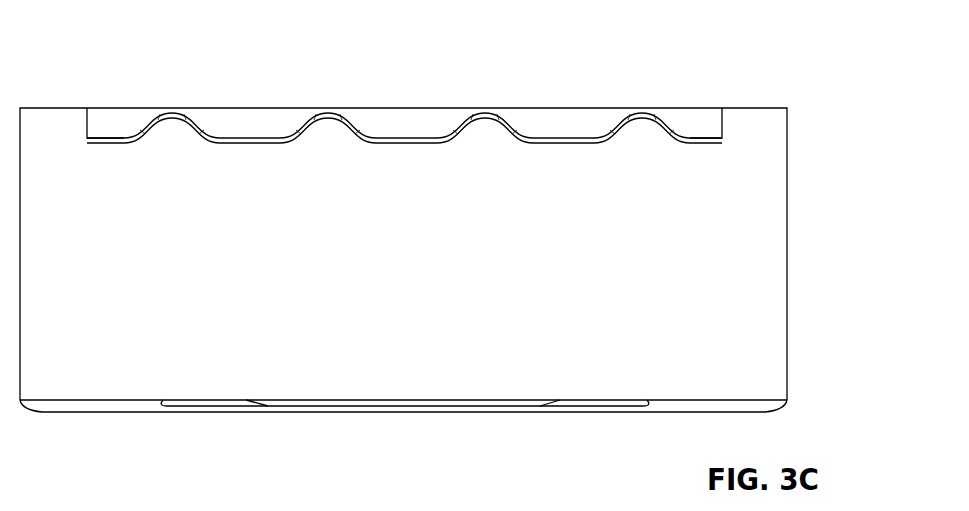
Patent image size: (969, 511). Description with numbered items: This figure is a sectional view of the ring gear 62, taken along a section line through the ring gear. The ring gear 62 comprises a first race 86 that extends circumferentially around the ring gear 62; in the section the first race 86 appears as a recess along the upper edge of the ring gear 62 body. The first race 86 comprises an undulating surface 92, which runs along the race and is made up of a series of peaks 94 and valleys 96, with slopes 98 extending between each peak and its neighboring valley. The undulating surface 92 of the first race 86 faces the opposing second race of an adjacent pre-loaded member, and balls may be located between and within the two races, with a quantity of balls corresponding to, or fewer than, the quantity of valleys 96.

The ring gear 62 is at (432, 100).
The first race 86 is at (116, 119).
The undulating surface 92 is at (369, 120).
The peaks 94 is at (172, 110).
The valleys 96 is at (259, 135).
The slopes 98 is at (200, 127).